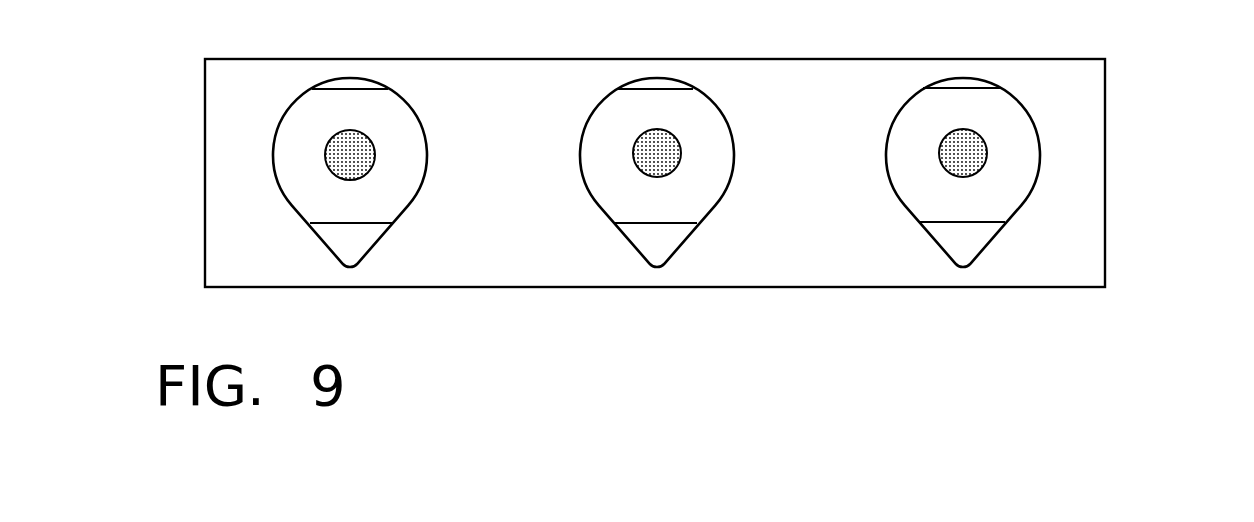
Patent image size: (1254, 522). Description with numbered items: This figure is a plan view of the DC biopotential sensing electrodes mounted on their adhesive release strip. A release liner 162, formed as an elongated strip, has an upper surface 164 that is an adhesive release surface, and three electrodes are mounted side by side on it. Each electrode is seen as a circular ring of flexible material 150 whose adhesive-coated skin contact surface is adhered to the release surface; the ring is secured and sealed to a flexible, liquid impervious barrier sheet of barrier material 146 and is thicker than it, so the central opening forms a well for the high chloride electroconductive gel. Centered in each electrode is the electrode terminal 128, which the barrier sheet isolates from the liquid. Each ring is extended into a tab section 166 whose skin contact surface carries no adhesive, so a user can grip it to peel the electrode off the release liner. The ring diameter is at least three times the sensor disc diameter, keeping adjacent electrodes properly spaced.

The electrode terminal 128 is at (678, 147).
The barrier material 146 is at (357, 217).
The circular ring of flexible material 150 is at (967, 77).
The release liner 162 is at (1028, 273).
The upper surface 164 is at (517, 127).
The tab section 166 is at (670, 242).